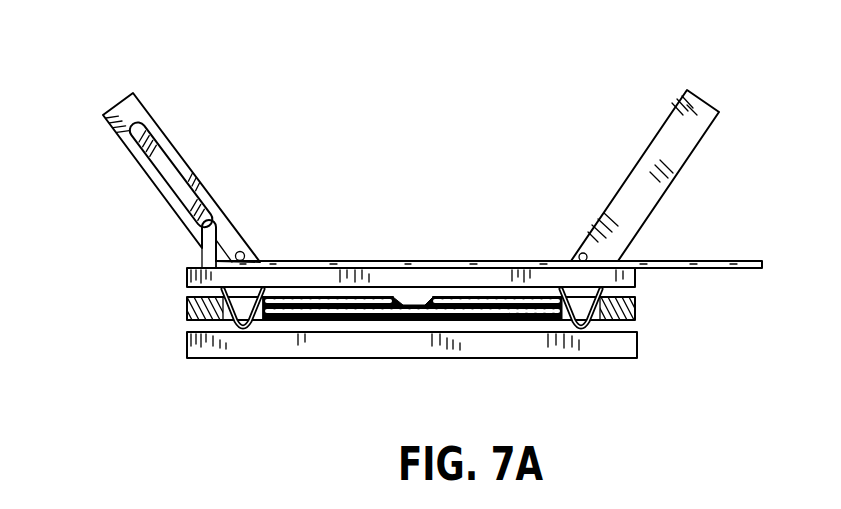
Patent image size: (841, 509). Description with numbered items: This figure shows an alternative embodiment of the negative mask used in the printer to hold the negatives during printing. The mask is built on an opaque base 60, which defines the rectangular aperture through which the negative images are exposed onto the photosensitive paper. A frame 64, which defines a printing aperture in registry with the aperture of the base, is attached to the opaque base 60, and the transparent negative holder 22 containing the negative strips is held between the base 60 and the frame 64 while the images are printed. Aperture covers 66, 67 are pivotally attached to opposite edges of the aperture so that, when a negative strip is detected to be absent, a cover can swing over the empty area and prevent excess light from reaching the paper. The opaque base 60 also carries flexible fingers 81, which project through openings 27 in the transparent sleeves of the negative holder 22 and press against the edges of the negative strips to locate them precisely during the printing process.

The opaque base 60 is at (186, 276).
The frame 64 is at (287, 359).
The aperture cover 66 is at (123, 97).
The aperture cover 67 is at (700, 97).
The flexible fingers 81 is at (220, 291).
The transparent negative holder 22 is at (637, 305).
The openings 27 is at (230, 328).